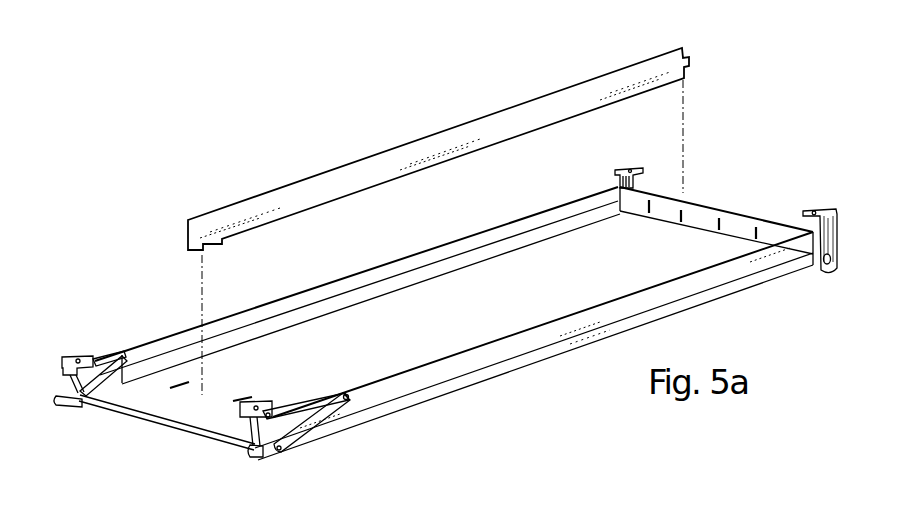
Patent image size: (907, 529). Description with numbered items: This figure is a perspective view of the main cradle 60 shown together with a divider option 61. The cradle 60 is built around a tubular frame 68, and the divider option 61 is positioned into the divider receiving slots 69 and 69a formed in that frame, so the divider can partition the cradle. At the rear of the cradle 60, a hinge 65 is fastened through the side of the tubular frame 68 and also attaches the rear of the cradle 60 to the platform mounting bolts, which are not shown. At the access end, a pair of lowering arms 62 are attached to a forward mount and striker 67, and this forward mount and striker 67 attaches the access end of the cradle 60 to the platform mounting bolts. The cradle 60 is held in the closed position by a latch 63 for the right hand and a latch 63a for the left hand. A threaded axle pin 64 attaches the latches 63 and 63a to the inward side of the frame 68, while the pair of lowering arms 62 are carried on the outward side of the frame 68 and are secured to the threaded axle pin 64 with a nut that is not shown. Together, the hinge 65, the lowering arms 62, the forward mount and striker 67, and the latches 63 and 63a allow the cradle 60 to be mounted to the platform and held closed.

The cradle 60 is at (707, 203).
The divider option 61 is at (257, 197).
The lowering arms 62 is at (315, 418).
The latch 63 is at (248, 438).
The latch 63a is at (87, 400).
The threaded axle pin 64 is at (279, 452).
The hinge 65 is at (830, 213).
The forward mount and striker 67 is at (83, 356).
The tubular frame 68 is at (458, 388).
The divider receiving slots 69 is at (678, 213).
The divider receiving slot 69a is at (203, 385).